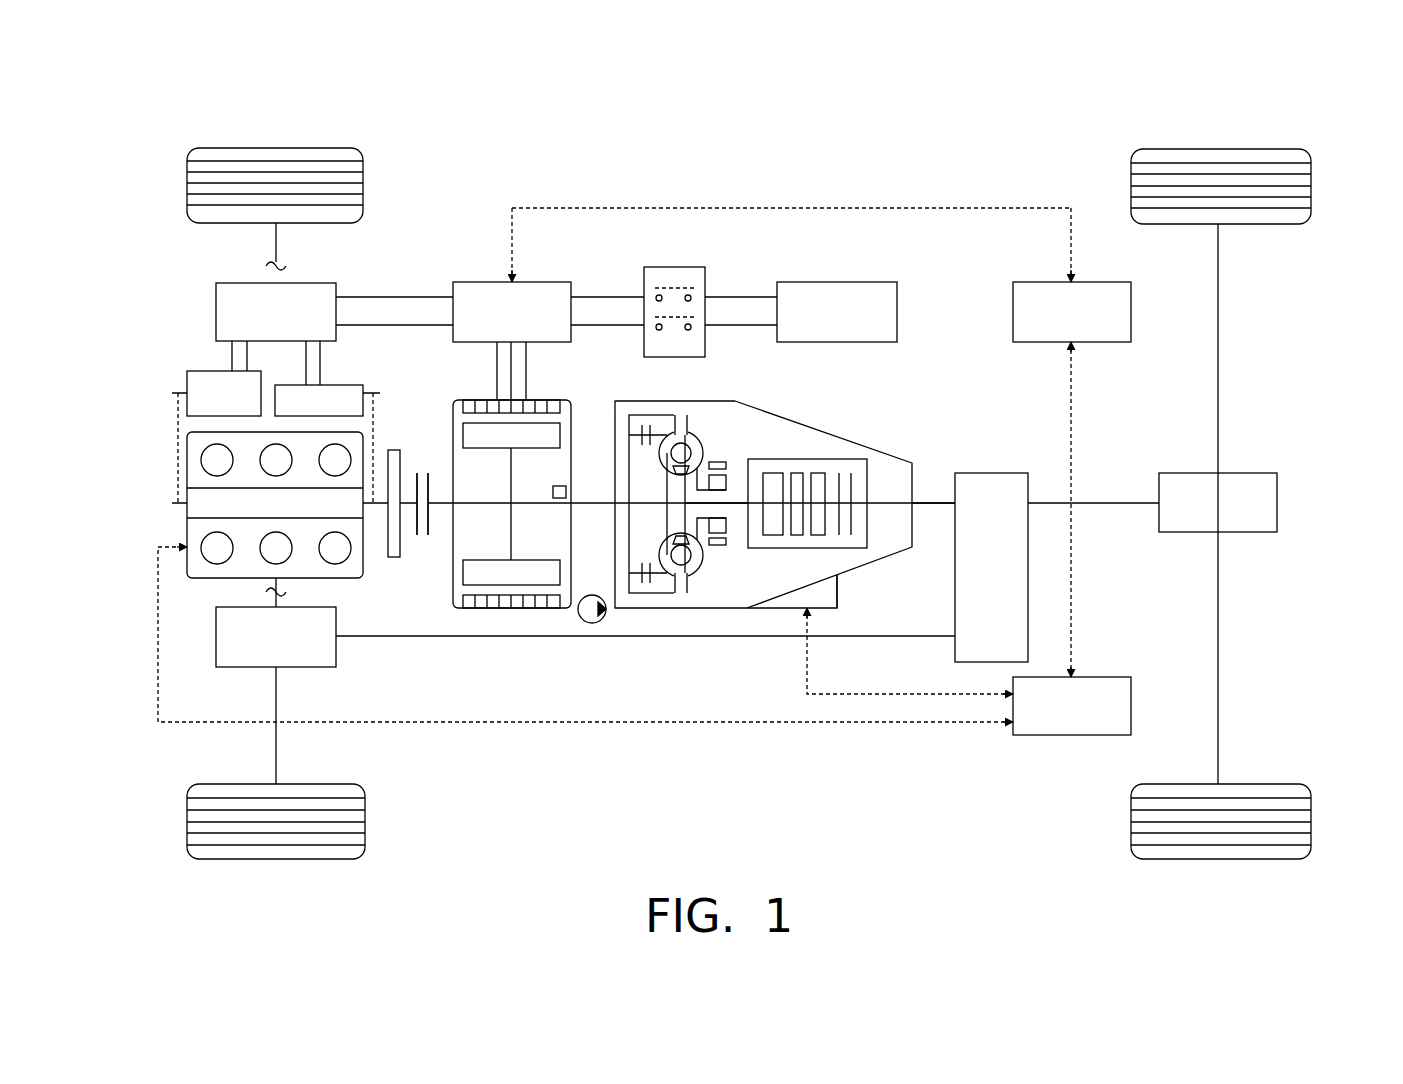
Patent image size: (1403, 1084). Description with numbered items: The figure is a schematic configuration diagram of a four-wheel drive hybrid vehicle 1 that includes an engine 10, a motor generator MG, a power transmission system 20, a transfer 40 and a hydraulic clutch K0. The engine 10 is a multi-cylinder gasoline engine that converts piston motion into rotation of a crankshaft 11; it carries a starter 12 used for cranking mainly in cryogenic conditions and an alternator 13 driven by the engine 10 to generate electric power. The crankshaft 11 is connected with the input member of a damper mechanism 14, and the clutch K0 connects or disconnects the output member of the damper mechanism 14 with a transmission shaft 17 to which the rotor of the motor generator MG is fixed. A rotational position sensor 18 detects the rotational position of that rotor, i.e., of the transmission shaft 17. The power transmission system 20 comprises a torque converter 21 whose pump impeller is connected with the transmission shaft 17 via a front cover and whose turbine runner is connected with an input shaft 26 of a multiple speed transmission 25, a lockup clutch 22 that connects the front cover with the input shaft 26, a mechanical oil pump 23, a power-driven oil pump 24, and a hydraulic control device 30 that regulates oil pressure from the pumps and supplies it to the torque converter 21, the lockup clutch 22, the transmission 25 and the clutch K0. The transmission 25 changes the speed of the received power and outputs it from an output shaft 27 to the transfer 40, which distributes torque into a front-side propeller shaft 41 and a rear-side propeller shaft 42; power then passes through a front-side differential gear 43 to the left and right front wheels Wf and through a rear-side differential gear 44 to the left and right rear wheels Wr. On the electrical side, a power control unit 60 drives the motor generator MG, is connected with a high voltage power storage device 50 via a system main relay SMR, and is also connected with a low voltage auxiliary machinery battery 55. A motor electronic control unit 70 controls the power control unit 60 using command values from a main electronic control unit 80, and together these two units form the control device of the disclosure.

The hybrid vehicle 1 is at (934, 150).
The engine 10 is at (212, 578).
The crankshaft 11 is at (380, 506).
The starter 12 is at (342, 385).
The alternator 13 is at (198, 371).
The damper mechanism 14 is at (391, 448).
The transmission shaft 17 is at (588, 507).
The rotational position sensor 18 is at (558, 486).
The power transmission system 20 is at (885, 450).
The torque converter 21 is at (698, 432).
The lockup clutch 22 is at (657, 581).
The mechanical oil pump 23 is at (724, 551).
The power-driven oil pump 24 is at (592, 623).
The transmission 25 is at (833, 456).
The input shaft 26 is at (734, 502).
The output shaft 27 is at (928, 508).
The hydraulic control device 30 is at (828, 587).
The transfer 40 is at (980, 473).
The front-side propeller shaft 41 is at (888, 640).
The rear-side propeller shaft 42 is at (1079, 505).
The front-side differential gear 43 is at (216, 660).
The rear-side differential gear 44 is at (1277, 503).
The power storage device 50 is at (890, 282).
The auxiliary machinery battery 55 is at (234, 283).
The power control unit 60 is at (551, 282).
The motor electronic control unit 70 is at (1040, 282).
The electronic control unit 80 is at (1100, 677).
The clutch K0 is at (424, 538).
The motor generator MG is at (522, 612).
The system main relay SMR is at (707, 283).
The front wheels Wf is at (276, 148).
The rear wheels Wr is at (1219, 149).